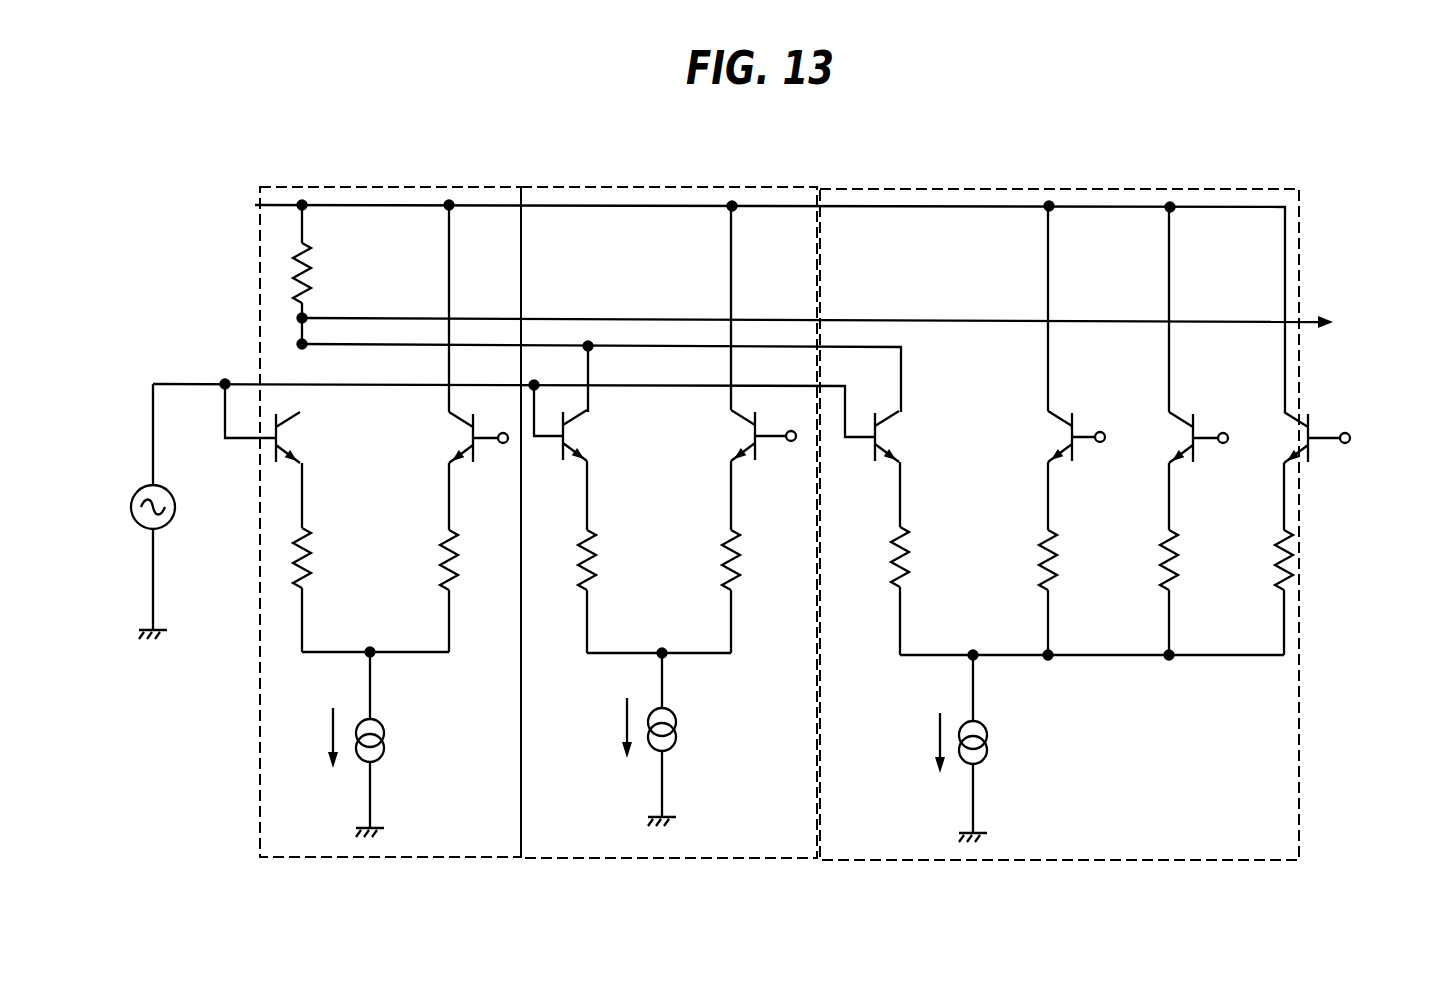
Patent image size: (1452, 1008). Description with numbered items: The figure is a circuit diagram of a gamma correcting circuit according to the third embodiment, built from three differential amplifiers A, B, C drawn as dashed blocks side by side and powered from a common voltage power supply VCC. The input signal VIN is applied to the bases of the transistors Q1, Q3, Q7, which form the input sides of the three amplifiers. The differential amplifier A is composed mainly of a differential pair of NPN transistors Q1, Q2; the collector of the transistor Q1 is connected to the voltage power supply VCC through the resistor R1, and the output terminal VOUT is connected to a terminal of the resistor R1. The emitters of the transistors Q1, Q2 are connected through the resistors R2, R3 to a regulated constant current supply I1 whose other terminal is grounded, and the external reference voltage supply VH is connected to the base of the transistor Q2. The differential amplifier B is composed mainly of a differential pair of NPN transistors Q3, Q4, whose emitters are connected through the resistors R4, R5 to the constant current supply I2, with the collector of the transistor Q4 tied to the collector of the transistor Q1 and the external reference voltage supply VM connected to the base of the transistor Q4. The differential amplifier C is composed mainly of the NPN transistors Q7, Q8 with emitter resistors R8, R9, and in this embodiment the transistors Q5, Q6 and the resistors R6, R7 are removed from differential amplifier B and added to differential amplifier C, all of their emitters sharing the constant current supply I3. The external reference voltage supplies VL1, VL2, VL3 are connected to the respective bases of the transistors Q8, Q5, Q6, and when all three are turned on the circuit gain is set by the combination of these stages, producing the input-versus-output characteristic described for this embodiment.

The differential amplifier A is at (383, 187).
The differential amplifier B is at (748, 187).
The differential amplifier C is at (1128, 189).
The voltage power supply VCC is at (734, 302).
The output terminal VOUT is at (859, 326).
The input signal source VIN is at (168, 515).
The resistor R1 is at (308, 262).
The resistor R2 is at (311, 555).
The resistor R3 is at (440, 556).
The resistor R4 is at (595, 548).
The resistor R5 is at (722, 578).
The resistor R6 is at (1154, 558).
The resistor R7 is at (1268, 558).
The resistor R8 is at (909, 555).
The resistor R9 is at (1032, 558).
The transistor Q1 is at (282, 441).
The transistor Q2 is at (456, 440).
The transistor Q3 is at (593, 455).
The transistor Q4 is at (736, 437).
The transistor Q5 is at (1172, 441).
The transistor Q6 is at (1289, 441).
The transistor Q7 is at (881, 445).
The transistor Q8 is at (1052, 440).
The constant current supply I1 is at (385, 738).
The constant current supply I2 is at (677, 728).
The constant current supply I3 is at (988, 738).
The external reference voltage supply VH is at (502, 445).
The external reference voltage supply VM is at (792, 443).
The external reference voltage supply VL1 is at (1104, 445).
The external reference voltage supply VL2 is at (1227, 446).
The external reference voltage supply VL3 is at (1349, 446).